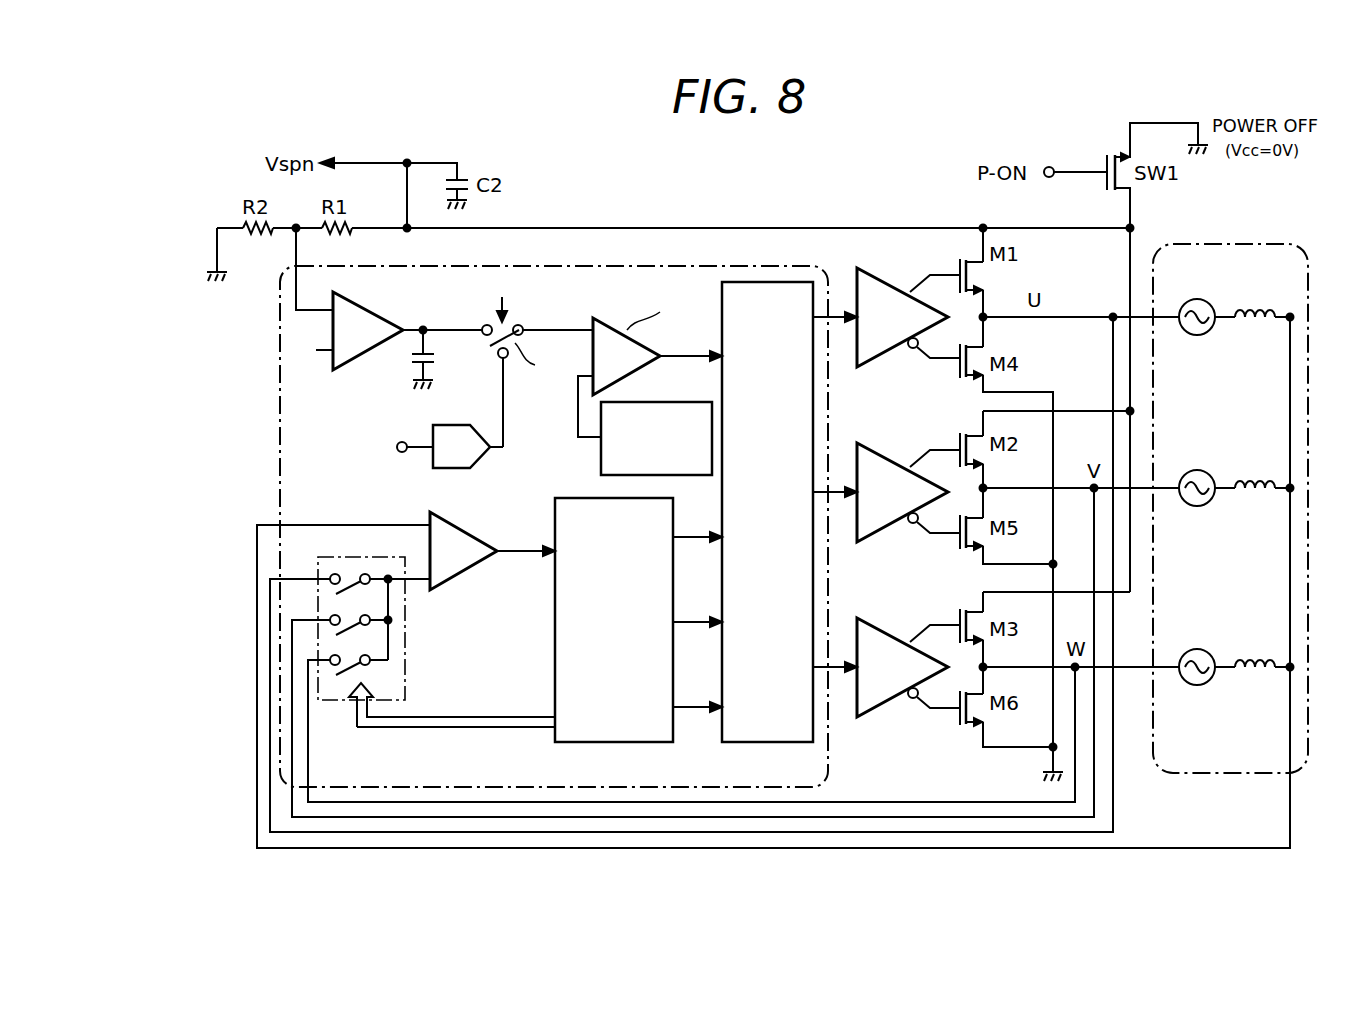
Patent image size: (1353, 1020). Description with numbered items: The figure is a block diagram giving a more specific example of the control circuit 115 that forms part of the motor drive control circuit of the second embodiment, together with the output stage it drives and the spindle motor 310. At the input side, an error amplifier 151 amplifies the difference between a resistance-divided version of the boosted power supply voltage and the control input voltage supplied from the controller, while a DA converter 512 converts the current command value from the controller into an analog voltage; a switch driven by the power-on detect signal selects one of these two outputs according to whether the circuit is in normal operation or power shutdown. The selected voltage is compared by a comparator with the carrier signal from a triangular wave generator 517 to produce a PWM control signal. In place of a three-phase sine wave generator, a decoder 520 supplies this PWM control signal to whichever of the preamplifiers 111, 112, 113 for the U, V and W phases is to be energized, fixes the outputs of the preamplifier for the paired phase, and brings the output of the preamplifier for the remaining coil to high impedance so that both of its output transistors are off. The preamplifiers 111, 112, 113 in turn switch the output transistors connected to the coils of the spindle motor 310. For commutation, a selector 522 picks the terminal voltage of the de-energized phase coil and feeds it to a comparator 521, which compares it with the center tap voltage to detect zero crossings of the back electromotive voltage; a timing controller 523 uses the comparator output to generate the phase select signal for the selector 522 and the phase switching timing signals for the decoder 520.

The control circuit 115 is at (678, 266).
The current detection amplifier 151 is at (376, 306).
The DA converter 512 is at (478, 462).
The triangular wave generator 517 is at (600, 460).
The decoder 520 is at (757, 742).
The comparator 521 is at (462, 580).
The selector 522 is at (405, 616).
The timing controller 523 is at (605, 742).
The pre-amplifier 111 is at (885, 355).
The pre-amplifier 112 is at (885, 530).
The pre-amplifier 113 is at (885, 705).
The spindle motor 310 is at (1205, 775).